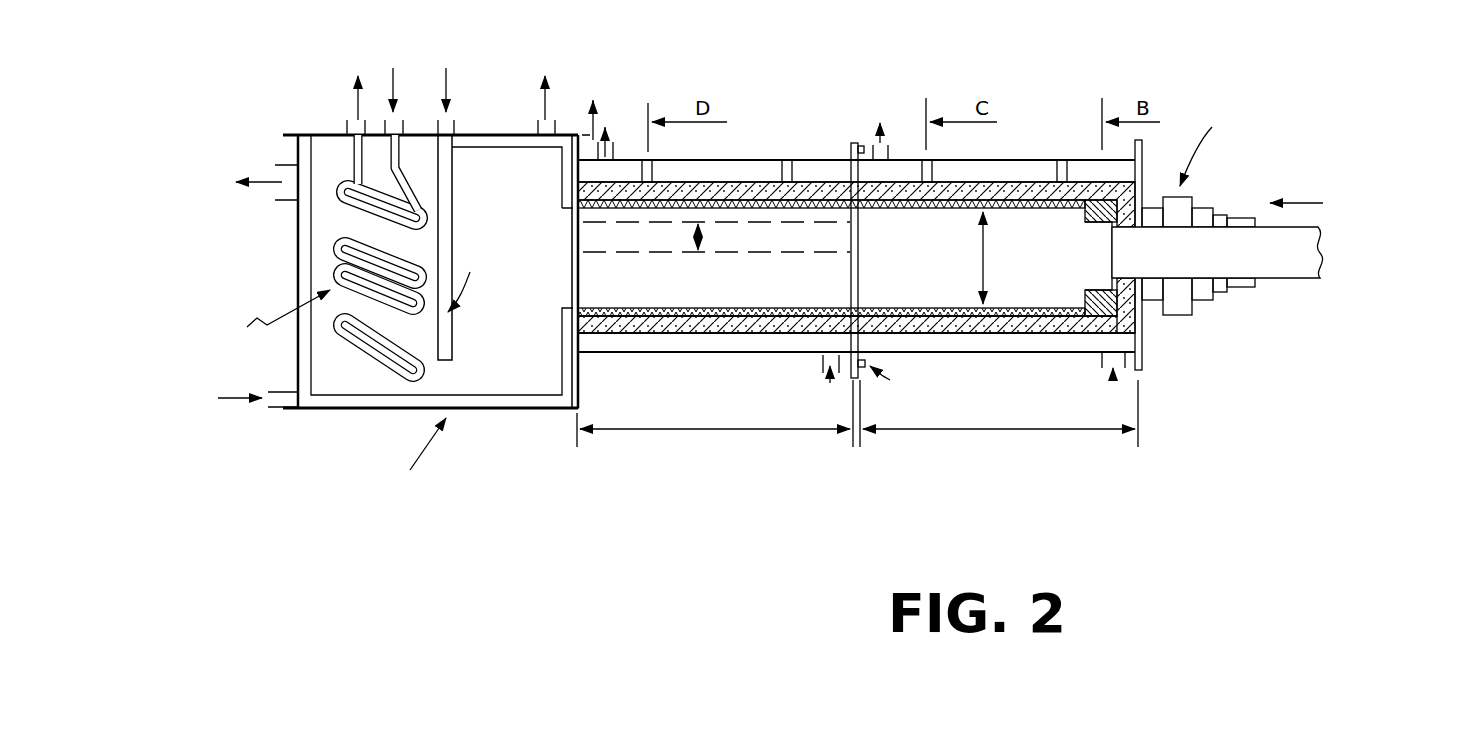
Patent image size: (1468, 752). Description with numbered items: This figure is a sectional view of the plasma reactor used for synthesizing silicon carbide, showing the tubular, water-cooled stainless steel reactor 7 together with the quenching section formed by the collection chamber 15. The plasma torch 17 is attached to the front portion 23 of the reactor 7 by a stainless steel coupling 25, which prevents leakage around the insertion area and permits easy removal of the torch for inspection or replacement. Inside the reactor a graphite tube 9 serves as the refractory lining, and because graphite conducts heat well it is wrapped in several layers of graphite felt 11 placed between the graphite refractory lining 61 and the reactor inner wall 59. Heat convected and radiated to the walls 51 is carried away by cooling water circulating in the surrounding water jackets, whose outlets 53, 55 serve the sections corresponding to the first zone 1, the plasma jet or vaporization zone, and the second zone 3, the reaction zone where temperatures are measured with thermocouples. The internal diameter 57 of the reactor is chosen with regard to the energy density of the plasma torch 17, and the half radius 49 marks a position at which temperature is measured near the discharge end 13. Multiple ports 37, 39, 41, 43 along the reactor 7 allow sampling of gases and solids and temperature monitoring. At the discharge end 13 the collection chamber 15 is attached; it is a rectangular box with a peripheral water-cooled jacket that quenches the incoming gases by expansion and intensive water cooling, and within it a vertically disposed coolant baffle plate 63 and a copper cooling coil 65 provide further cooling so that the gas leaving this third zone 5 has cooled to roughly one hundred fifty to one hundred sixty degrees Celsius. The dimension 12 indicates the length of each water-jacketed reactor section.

The first zone 1 is at (1067, 228).
The second zone 3 is at (727, 222).
The third zone 5 is at (510, 163).
The reactor 7 is at (1003, 158).
The graphite tube 9 is at (613, 320).
The graphite felt 11 is at (662, 322).
The section length 12 is at (857, 413).
The discharge end 13 is at (573, 280).
The collection chamber 15 is at (338, 412).
The plasma torch 17 is at (1325, 253).
The front portion 23 is at (1142, 343).
The stainless steel coupling 25 is at (1188, 202).
The port 37 is at (1067, 170).
The port 39 is at (923, 173).
The port 41 is at (767, 160).
The port 43 is at (648, 110).
The half radius 49 is at (698, 250).
The walls 51 is at (745, 345).
The cooling water outlet 53 is at (875, 140).
The cooling water outlet 55 is at (613, 152).
The internal diameter 57 is at (983, 260).
The reactor inner wall 59 is at (1042, 197).
The graphite refractory lining 61 is at (1022, 180).
The baffle plate 63 is at (443, 167).
The copper cooling coil 65 is at (340, 184).